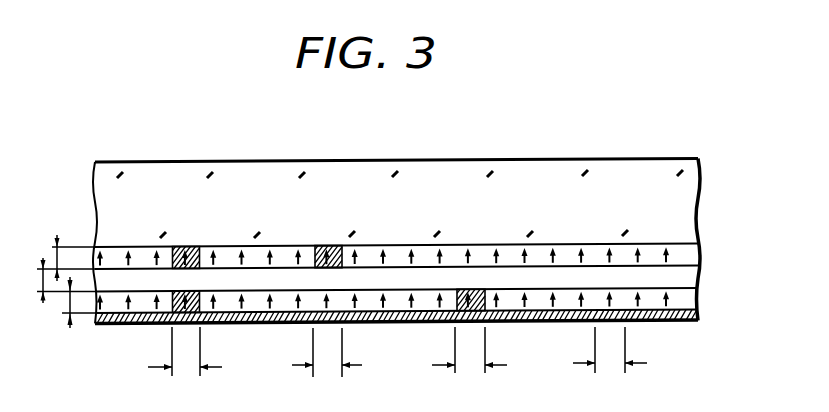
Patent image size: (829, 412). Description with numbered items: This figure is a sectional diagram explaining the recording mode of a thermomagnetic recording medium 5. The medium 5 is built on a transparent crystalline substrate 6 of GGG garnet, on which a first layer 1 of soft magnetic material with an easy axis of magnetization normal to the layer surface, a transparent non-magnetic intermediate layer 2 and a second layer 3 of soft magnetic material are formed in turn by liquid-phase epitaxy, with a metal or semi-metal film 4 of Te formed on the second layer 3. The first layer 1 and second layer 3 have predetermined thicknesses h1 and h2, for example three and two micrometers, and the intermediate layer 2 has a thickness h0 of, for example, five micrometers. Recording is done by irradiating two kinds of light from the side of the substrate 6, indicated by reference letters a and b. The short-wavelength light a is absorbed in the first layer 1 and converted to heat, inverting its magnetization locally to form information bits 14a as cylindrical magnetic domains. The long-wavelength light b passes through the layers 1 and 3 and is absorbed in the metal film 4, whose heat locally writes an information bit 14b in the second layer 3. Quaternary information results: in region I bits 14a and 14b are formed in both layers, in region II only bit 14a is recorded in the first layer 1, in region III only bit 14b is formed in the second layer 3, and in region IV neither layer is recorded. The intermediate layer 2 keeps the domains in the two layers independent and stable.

The first layer of soft magnetic material 1 is at (699, 253).
The transparent non-magnetic intermediate layer 2 is at (699, 278).
The second layer of soft magnetic material 3 is at (700, 302).
The metal film or semi-metal film 4 is at (673, 325).
The medium 5 is at (755, 225).
The transparent crystalline substrate 6 is at (695, 186).
The information bit 14a is at (191, 246).
The information bit 14b is at (172, 310).
The light of first wavelength a is at (398, 108).
The light of second wavelength b is at (485, 88).
The thickness of first layer h1 is at (57, 255).
The thickness of intermediate layer h0 is at (43, 277).
The thickness of second layer h2 is at (70, 304).
The region I is at (185, 353).
The region II is at (327, 353).
The region III is at (469, 352).
The region IV is at (610, 352).